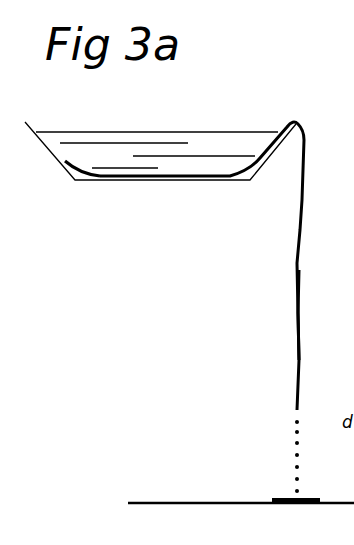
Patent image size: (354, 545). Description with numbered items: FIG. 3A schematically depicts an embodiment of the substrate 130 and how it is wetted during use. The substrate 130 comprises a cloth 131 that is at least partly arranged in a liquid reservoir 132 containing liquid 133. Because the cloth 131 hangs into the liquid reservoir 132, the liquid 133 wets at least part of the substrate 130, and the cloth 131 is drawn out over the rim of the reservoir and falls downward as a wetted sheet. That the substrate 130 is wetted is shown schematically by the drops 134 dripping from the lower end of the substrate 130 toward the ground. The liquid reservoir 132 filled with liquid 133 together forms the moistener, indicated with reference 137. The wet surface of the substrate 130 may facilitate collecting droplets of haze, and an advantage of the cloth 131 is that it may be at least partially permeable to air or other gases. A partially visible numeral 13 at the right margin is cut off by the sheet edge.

The moistener 137 is at (108, 130).
The liquid 133 is at (203, 152).
The liquid reservoir 132 is at (53, 162).
The substrate 130 is at (305, 232).
The cloth 131 is at (298, 314).
The drops 134 is at (297, 457).
The film (clipped numeral) 13 is at (345, 324).